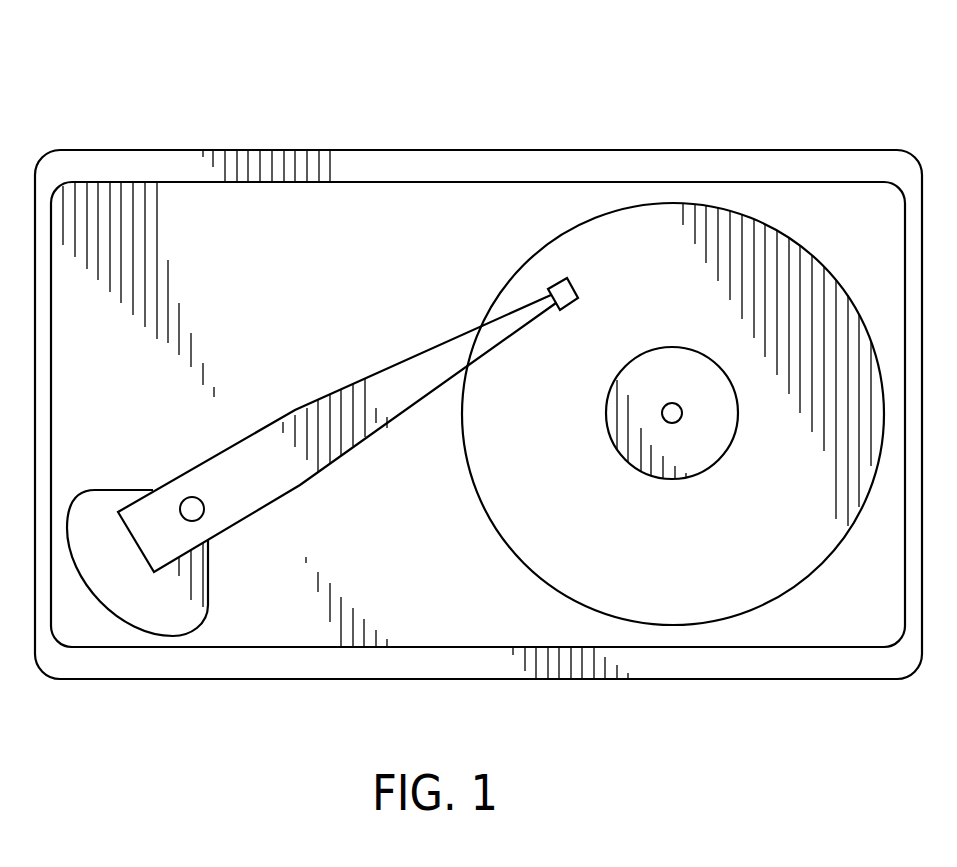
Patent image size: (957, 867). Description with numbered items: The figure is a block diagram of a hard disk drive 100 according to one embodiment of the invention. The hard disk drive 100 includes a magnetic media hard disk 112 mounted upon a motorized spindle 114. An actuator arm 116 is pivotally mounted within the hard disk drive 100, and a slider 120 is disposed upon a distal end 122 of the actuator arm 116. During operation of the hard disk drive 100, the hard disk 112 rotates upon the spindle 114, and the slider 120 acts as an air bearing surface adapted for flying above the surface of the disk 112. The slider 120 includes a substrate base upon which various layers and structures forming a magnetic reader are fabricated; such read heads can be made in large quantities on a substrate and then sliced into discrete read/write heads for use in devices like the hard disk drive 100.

The hard disk drive 100 is at (772, 70).
The magnetic media hard disk 112 is at (535, 542).
The motorized spindle 114 is at (730, 428).
The actuator arm 116 is at (210, 457).
The slider 120 is at (567, 290).
The distal end 122 is at (415, 370).